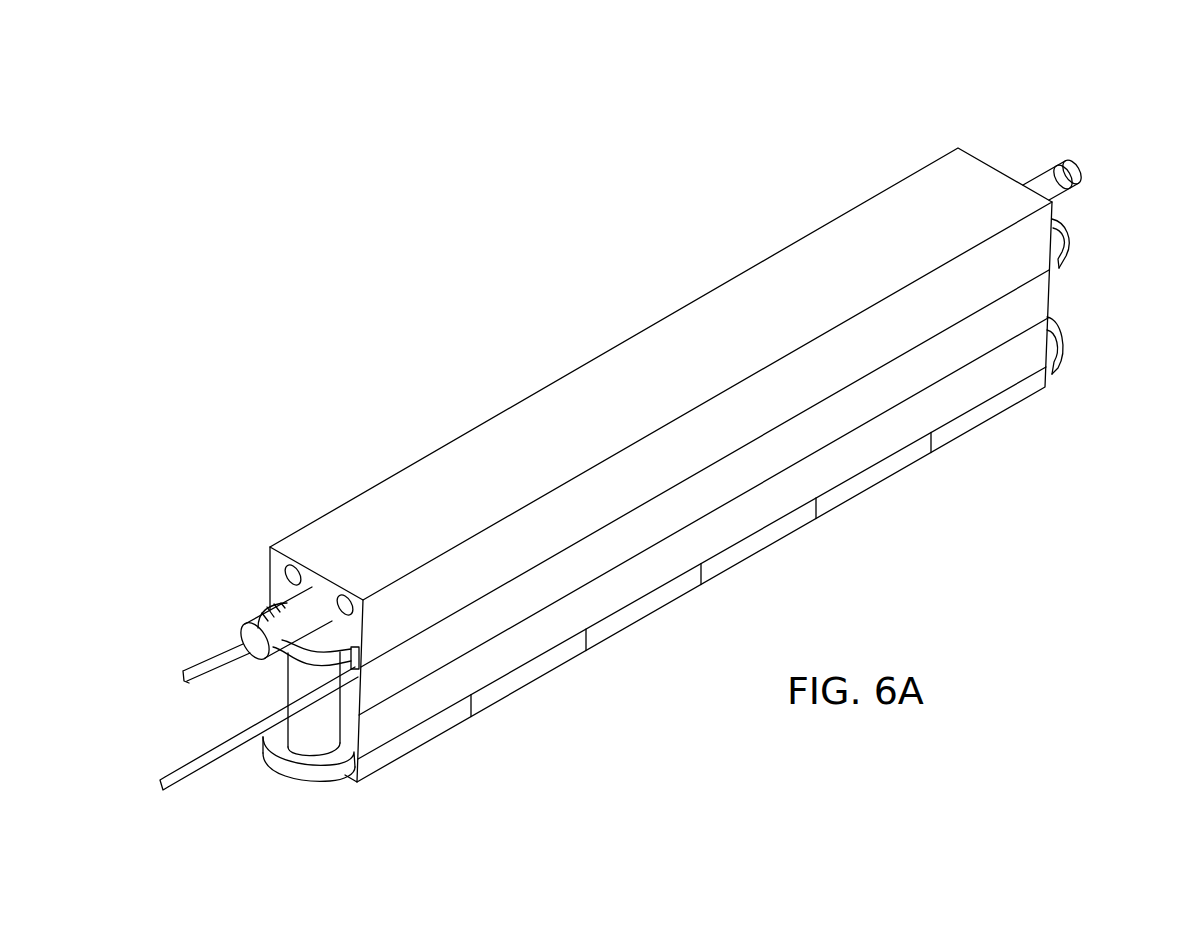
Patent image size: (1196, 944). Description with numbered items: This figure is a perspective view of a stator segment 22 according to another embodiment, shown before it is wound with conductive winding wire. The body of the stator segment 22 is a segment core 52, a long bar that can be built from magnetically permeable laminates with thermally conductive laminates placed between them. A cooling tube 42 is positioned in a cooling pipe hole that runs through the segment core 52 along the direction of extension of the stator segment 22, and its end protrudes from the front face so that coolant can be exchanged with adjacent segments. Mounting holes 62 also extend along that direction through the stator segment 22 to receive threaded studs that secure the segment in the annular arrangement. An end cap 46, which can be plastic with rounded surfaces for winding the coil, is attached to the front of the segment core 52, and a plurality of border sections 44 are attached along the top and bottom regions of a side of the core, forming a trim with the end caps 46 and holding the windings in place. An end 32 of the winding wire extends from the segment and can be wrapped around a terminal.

The stator segment 22 is at (1123, 120).
The segment core 52 is at (710, 308).
The border section 44 is at (412, 743).
The mounting hole 62 is at (283, 576).
The cooling tube 42 is at (252, 626).
The end of the winding wire 32 is at (190, 664).
The end cap 46 is at (323, 733).